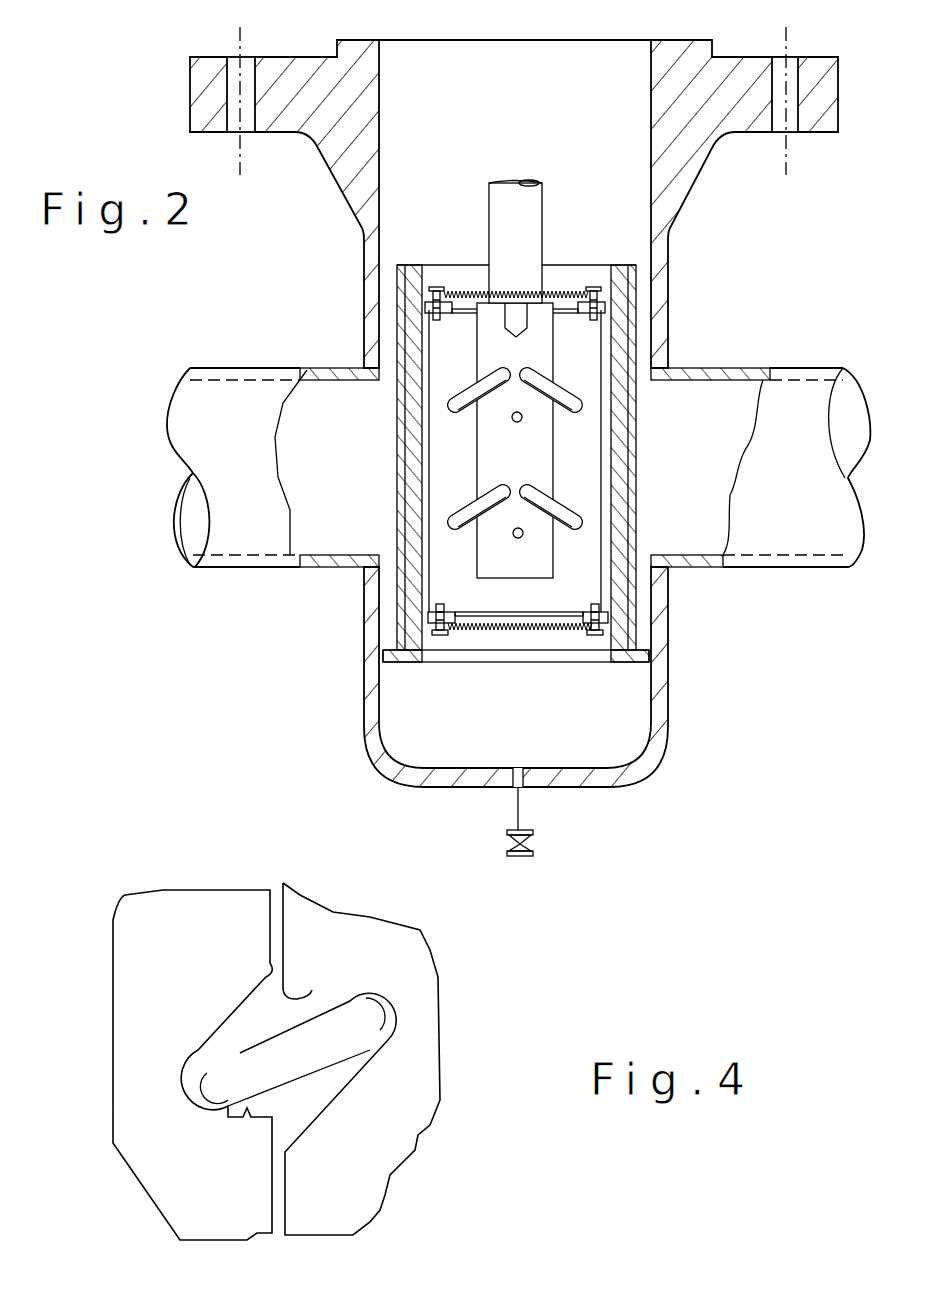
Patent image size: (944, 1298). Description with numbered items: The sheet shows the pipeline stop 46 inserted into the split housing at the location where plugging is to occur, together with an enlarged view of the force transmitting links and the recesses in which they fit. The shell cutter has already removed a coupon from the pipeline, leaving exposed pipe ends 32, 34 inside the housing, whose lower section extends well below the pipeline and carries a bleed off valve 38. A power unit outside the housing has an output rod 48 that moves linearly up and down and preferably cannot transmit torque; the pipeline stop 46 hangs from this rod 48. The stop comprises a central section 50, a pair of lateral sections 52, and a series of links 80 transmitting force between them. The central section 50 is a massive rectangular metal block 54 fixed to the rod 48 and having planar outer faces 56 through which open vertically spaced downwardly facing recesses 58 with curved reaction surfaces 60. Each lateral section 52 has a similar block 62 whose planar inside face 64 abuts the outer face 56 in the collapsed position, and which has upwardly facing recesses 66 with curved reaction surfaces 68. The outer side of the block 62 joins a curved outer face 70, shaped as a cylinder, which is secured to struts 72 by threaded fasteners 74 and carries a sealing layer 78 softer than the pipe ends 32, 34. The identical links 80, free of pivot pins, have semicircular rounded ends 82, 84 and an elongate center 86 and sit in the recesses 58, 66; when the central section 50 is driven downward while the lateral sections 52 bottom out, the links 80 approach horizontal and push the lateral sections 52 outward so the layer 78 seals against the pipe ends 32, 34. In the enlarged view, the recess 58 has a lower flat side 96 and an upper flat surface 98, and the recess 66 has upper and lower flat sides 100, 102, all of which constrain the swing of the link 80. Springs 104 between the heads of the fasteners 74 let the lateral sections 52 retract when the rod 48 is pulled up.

In FIG. 2, the exposed pipe end 32 is at (393, 382).
In FIG. 2, the exposed pipe end 34 is at (643, 373).
In FIG. 2, the bleed off valve 38 is at (528, 841).
In FIG. 2, the pipeline stop 46 is at (564, 133).
In FIG. 2, the rod 48 is at (492, 203).
In FIG. 4, the central section 50 is at (343, 896).
In FIG. 4, the lateral section 52 is at (113, 1161).
In FIG. 2, the block 54 is at (541, 473).
In FIG. 4, the block 54 is at (399, 1140).
In FIG. 4, the planar outer face 56 is at (279, 895).
In FIG. 4, the downwardly facing recess 58 is at (226, 1079).
In FIG. 4, the curved reaction surface 60 is at (392, 1040).
In FIG. 2, the block 62 is at (480, 473).
In FIG. 4, the block 62 is at (174, 1007).
In FIG. 4, the inside face 64 is at (272, 922).
In FIG. 4, the upwardly facing recess 66 is at (318, 993).
In FIG. 4, the curved reaction surface 68 is at (190, 1092).
In FIG. 2, the curved outer face 70 is at (403, 268).
In FIG. 2, the strut 72 is at (577, 617).
In FIG. 2, the threaded fastener 74 is at (587, 288).
In FIG. 2, the sealing layer 78 is at (398, 493).
In FIG. 2, the link 80 is at (460, 526).
In FIG. 4, the link 80 is at (337, 1010).
In FIG. 4, the rounded end 82 is at (365, 1012).
In FIG. 4, the rounded end 84 is at (222, 1110).
In FIG. 4, the elongate center 86 is at (319, 1063).
In FIG. 4, the lower flat side 96 is at (297, 1130).
In FIG. 4, the upper flat surface 98 is at (314, 994).
In FIG. 4, the upper flat side 100 is at (257, 1118).
In FIG. 4, the lower flat side 102 is at (224, 1018).
In FIG. 2, the spring 104 is at (465, 292).